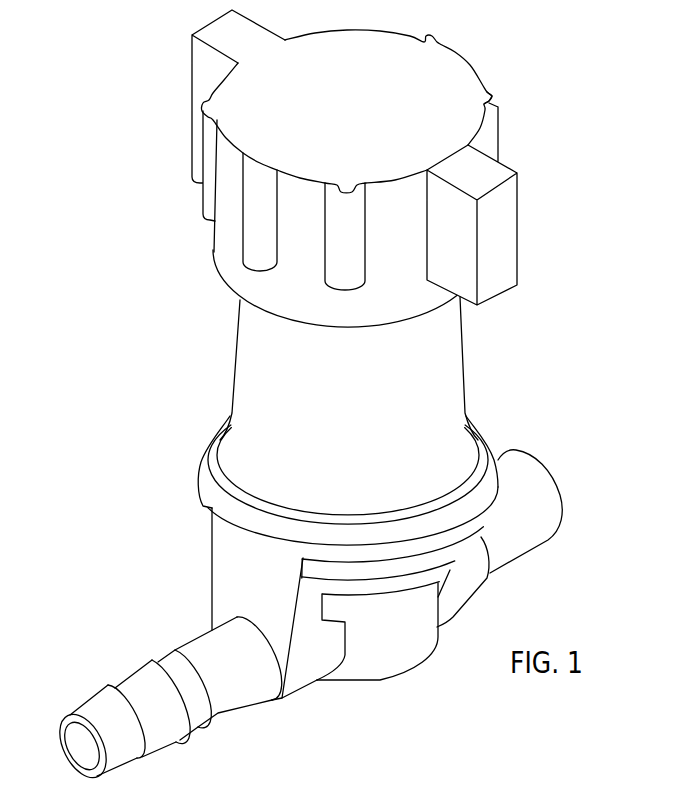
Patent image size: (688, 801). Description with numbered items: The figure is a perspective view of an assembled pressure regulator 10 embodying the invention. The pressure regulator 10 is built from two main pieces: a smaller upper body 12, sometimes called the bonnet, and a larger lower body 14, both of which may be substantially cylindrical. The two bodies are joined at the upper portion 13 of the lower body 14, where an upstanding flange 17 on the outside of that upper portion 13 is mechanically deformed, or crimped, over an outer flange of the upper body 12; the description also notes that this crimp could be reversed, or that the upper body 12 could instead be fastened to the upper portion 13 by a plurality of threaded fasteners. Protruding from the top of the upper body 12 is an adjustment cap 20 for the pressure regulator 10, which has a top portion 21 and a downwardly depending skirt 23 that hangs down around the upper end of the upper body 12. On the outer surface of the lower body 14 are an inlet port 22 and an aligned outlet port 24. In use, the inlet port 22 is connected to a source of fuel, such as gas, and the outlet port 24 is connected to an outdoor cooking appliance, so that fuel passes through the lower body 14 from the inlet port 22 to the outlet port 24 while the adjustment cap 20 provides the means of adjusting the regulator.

The pressure regulator 10 is at (158, 180).
The upper body 12 is at (474, 400).
The upper portion of the lower body 13 is at (190, 479).
The lower body 14 is at (202, 548).
The upstanding flange 17 is at (216, 468).
The adjustment cap 20 is at (478, 62).
The top portion 21 is at (468, 113).
The inlet port 22 is at (553, 480).
The skirt 23 is at (420, 298).
The outlet port 24 is at (75, 742).